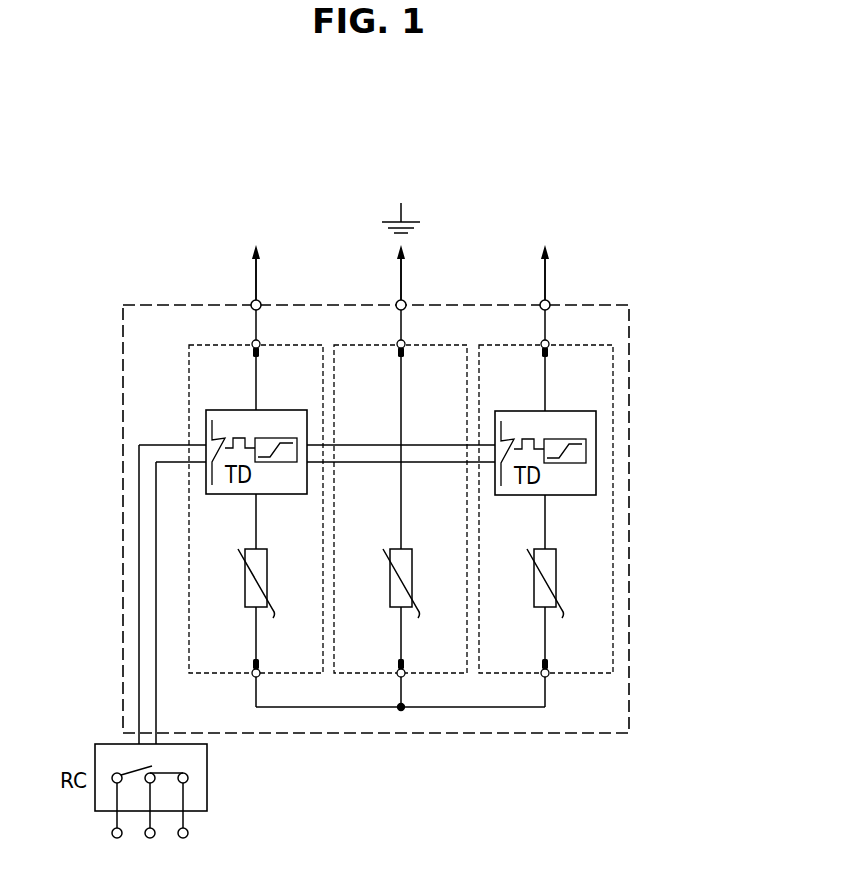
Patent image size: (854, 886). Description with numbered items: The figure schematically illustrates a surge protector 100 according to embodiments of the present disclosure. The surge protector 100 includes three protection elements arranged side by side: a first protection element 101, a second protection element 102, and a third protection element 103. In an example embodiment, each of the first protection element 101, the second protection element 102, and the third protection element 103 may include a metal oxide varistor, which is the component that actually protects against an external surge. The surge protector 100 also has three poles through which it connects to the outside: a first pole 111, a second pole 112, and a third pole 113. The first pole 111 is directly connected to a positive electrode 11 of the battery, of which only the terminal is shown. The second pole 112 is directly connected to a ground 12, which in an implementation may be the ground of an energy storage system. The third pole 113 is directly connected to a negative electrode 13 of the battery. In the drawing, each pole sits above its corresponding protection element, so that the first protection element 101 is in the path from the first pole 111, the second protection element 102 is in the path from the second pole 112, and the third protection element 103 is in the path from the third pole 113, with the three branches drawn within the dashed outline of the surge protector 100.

The surge protector 100 is at (653, 162).
The positive electrode 11 is at (257, 200).
The ground 12 is at (402, 200).
The negative electrode 13 is at (547, 200).
The first pole 111 is at (261, 301).
The second pole 112 is at (406, 301).
The third pole 113 is at (550, 301).
The first protection element 101 is at (262, 548).
The second protection element 102 is at (407, 548).
The third protection element 103 is at (551, 548).